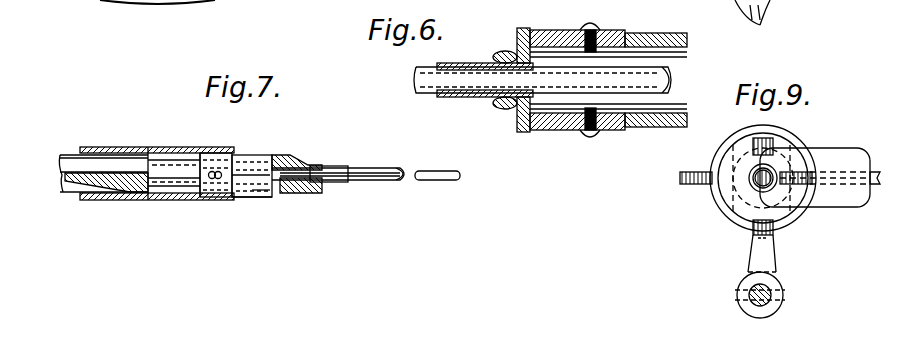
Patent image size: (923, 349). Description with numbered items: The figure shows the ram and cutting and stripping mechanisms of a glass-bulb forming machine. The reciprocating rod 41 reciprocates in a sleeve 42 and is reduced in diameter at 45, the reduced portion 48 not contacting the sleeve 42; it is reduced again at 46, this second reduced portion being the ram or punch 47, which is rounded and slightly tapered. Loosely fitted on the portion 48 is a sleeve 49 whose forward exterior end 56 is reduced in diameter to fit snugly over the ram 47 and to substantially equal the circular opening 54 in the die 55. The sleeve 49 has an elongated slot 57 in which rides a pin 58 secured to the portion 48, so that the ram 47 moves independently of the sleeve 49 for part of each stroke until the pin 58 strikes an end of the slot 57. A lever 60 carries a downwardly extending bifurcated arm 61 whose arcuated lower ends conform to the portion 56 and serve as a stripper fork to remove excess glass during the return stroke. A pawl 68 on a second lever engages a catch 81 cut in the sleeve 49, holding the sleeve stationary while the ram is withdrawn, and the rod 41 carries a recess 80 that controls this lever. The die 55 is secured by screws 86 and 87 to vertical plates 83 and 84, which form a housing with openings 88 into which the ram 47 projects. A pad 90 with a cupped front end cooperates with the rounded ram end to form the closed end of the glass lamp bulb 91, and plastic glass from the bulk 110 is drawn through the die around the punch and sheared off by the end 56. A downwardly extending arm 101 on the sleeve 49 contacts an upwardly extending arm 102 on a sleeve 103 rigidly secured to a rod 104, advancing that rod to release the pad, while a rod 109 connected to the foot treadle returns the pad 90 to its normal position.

In FIG. 7, the reciprocating rod 41 is at (65, 160).
In FIG. 7, the sleeve 42 is at (126, 148).
In FIG. 9, the sleeve 42 is at (793, 150).
In FIG. 7, the first reduction in diameter 45 is at (156, 158).
In FIG. 7, the second reduction in diameter 46 is at (246, 155).
In FIG. 7, the ram or punch 47 is at (309, 170).
In FIG. 6, the ram or punch 47 is at (437, 94).
In FIG. 9, the ram or punch 47 is at (757, 183).
In FIG. 7, the reduced portion of rod 48 is at (183, 161).
In FIG. 7, the sleeve 49 is at (270, 156).
In FIG. 9, the sleeve 49 is at (745, 150).
In FIG. 6, the circular opening 54 is at (517, 44).
In FIG. 6, the die 55 is at (574, 30).
In FIG. 7, the forward exterior end of sleeve 56 is at (338, 167).
In FIG. 6, the forward exterior end of sleeve 56 is at (470, 98).
In FIG. 9, the forward exterior end of sleeve 56 is at (759, 187).
In FIG. 7, the elongated slot 57 is at (256, 192).
In FIG. 7, the pin 58 is at (216, 171).
In FIG. 9, the lever 60 is at (876, 173).
In FIG. 9, the bifurcated arm 61 is at (843, 160).
In FIG. 9, the pawl 68 is at (690, 186).
In FIG. 7, the recess 80 is at (68, 186).
In FIG. 7, the catch 81 is at (240, 199).
In FIG. 6, the vertical plate 83 is at (665, 32).
In FIG. 6, the vertical plate 84 is at (642, 126).
In FIG. 6, the screw 86 is at (602, 24).
In FIG. 6, the screw 87 is at (598, 140).
In FIG. 6, the opening 88 is at (568, 100).
In FIG. 7, the pad 90 is at (430, 182).
In FIG. 7, the glass lamp bulb 91 is at (394, 169).
In FIG. 6, the glass lamp bulb 91 is at (672, 78).
In FIG. 9, the downwardly extending arm 101 is at (777, 244).
In FIG. 9, the upwardly extending arm 102 is at (779, 263).
In FIG. 9, the sleeve 103 is at (782, 302).
In FIG. 9, the rod 104 is at (755, 300).
In FIG. 9, the rod 109 is at (757, 26).
In FIG. 6, the bulk of plastic glass 110 is at (505, 110).